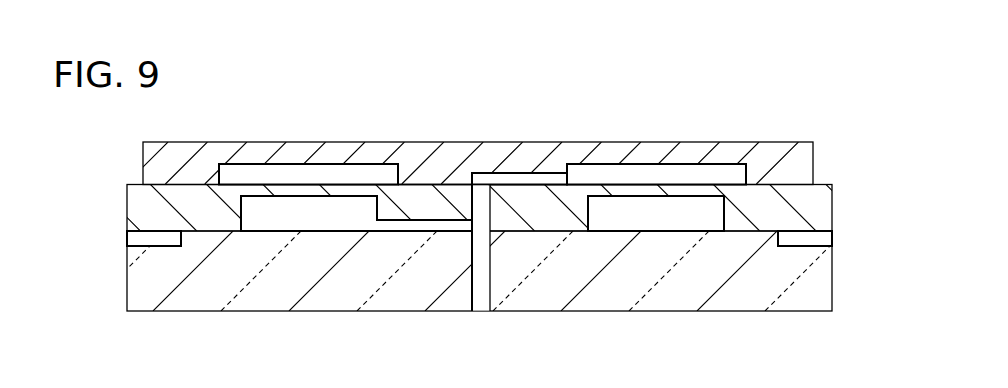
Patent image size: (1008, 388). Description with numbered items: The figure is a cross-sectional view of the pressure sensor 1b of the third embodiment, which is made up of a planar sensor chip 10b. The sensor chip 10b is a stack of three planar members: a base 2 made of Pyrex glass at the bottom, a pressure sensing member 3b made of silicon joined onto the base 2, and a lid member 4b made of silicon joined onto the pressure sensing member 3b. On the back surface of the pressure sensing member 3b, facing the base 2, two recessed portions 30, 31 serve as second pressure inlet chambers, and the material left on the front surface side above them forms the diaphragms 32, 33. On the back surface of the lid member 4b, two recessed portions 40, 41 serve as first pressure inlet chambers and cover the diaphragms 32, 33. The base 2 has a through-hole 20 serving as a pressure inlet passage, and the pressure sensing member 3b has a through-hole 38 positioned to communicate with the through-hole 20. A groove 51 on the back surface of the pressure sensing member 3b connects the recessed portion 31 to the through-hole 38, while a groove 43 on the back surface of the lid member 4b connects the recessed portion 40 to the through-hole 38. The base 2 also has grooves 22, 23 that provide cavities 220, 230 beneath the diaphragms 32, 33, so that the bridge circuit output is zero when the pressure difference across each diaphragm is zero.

The pressure sensor 1b is at (458, 65).
The sensor chip 10b is at (107, 311).
The base 2 is at (819, 268).
The pressure sensing member 3b is at (819, 208).
The lid member 4b is at (810, 165).
The recessed portion 41 is at (308, 138).
The diaphragm 33 is at (332, 190).
The groove 51 is at (422, 188).
The groove 43 is at (522, 181).
The recessed portion 40 is at (656, 138).
The diaphragm 32 is at (685, 190).
The groove 23 is at (153, 247).
The cavity 230 is at (176, 298).
The recessed portion 31 is at (287, 213).
The through-hole 20 is at (480, 302).
The through-hole 38 is at (483, 208).
The recessed portion 30 is at (630, 201).
The cavity 220 is at (782, 294).
The groove 22 is at (805, 247).